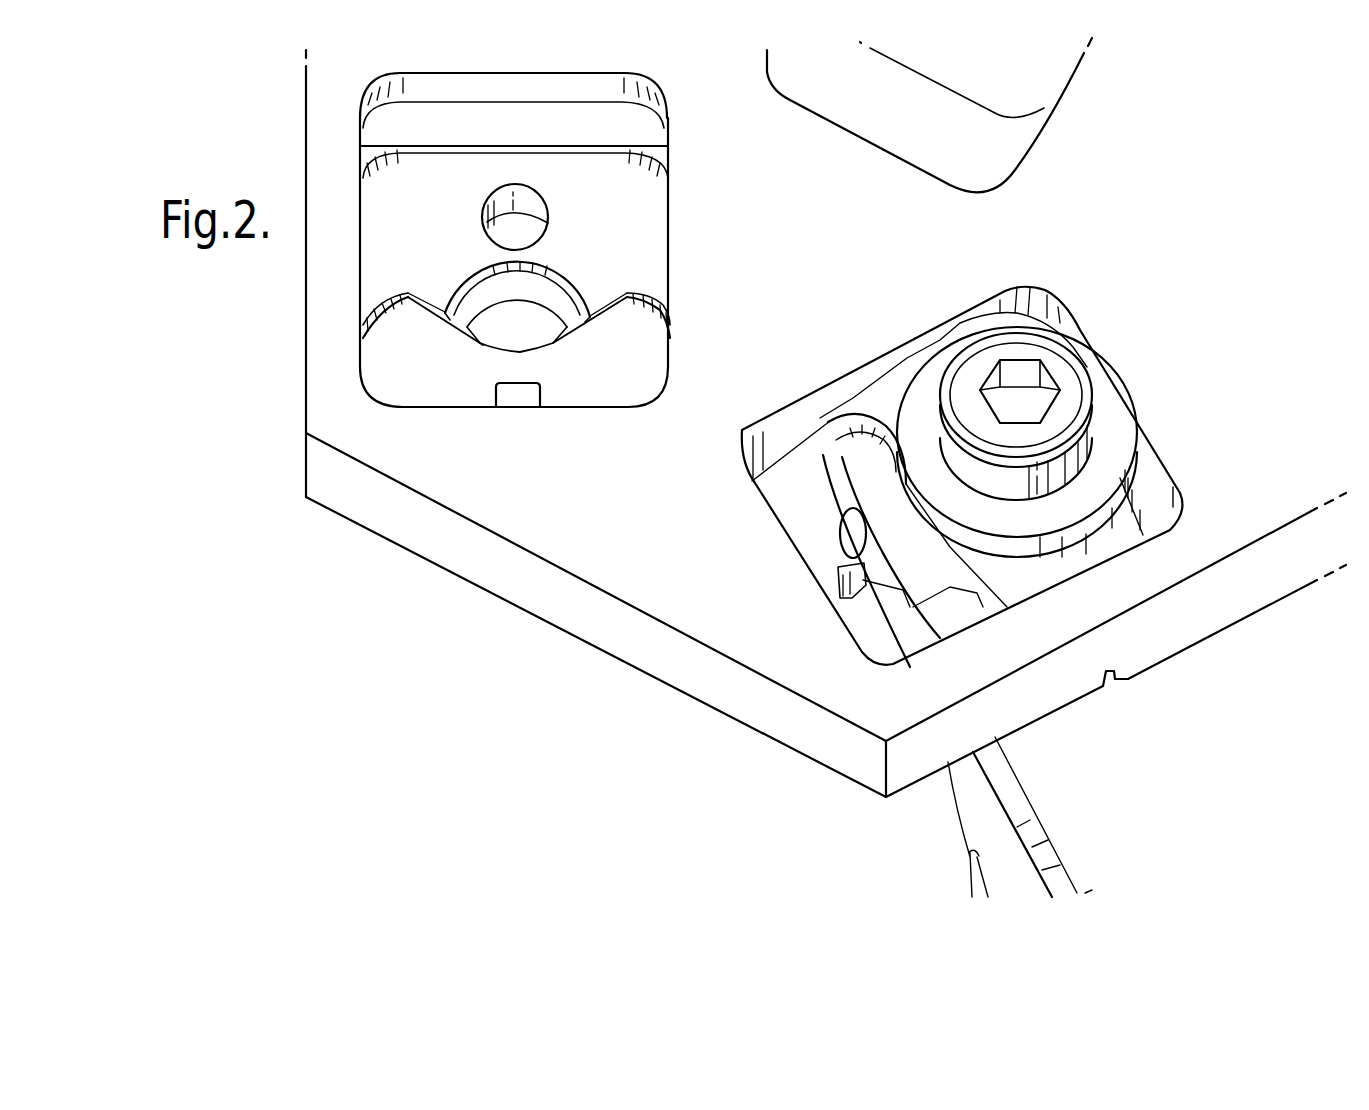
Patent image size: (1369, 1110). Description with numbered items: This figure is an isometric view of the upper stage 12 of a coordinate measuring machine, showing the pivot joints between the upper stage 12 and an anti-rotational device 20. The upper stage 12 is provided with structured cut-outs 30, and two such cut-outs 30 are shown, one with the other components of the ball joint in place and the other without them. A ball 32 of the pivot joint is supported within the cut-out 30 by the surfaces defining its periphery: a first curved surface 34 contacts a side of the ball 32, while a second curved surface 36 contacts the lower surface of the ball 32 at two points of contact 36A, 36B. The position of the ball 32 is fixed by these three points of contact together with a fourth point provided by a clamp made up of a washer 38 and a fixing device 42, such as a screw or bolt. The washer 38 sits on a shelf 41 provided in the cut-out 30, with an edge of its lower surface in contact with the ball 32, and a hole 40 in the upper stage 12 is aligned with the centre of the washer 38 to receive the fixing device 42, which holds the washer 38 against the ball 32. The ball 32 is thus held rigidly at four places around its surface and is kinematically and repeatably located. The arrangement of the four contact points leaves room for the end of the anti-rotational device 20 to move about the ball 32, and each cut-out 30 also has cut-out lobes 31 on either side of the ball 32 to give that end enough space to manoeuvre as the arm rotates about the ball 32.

The upper stage 12 is at (323, 343).
The anti-rotational device 20 is at (983, 832).
The structured cut-out 30 is at (668, 240).
The cut-out lobe 31 is at (363, 360).
The ball 32 is at (857, 553).
The first curved surface 34 is at (513, 383).
The second curved surface 36 is at (527, 327).
The point of contact 36A is at (563, 335).
The point of contact 36B is at (483, 333).
The washer 38 is at (1120, 412).
The hole 40 is at (503, 230).
The shelf 41 is at (647, 135).
The fixing device 42 is at (1070, 363).